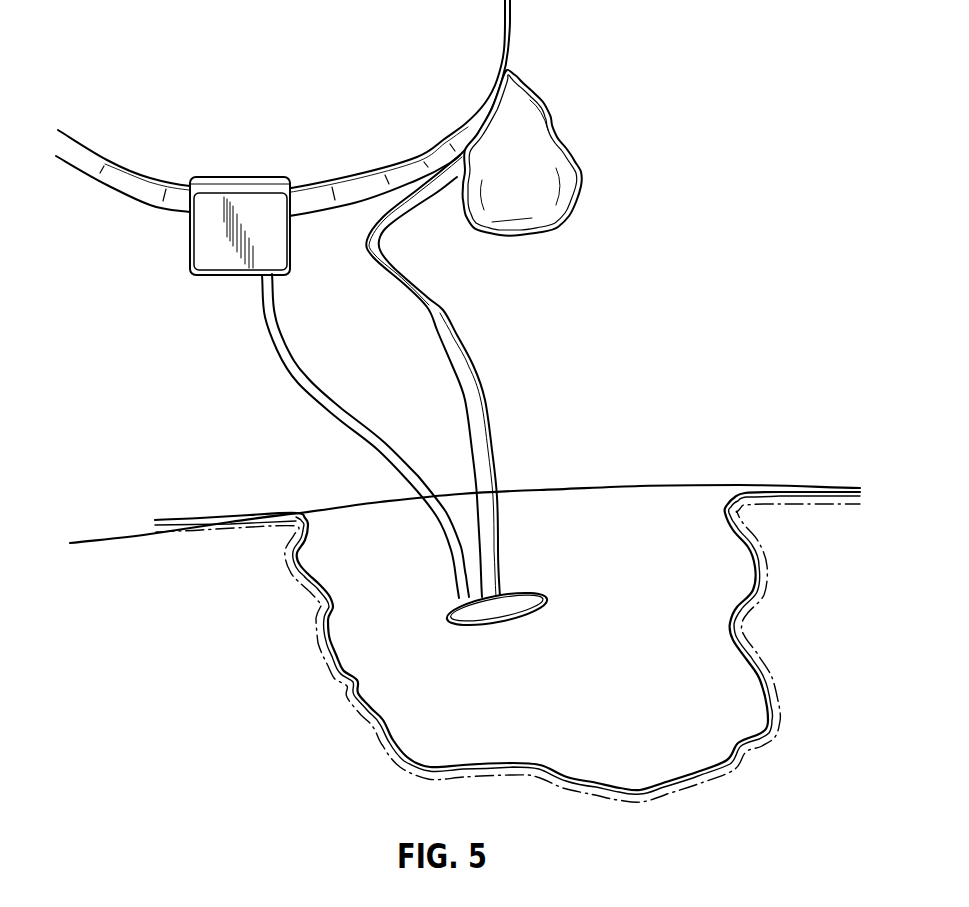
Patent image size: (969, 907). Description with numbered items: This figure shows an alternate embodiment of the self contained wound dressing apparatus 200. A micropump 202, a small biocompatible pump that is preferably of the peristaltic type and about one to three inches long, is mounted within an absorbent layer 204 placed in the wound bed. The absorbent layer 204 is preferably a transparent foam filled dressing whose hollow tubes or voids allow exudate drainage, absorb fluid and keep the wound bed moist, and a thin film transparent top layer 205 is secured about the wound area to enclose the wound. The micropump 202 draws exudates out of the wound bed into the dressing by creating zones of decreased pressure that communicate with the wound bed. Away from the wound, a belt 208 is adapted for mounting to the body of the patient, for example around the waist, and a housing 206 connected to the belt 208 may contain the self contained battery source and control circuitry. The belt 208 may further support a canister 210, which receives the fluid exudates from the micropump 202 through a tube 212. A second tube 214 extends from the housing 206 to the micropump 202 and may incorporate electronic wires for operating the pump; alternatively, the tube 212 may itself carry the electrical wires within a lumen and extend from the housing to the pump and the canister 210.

The wound dressing apparatus 200 is at (158, 381).
The micropump 202 is at (457, 630).
The absorbent layer 204 is at (697, 592).
The thin film transparent top layer 205 is at (213, 512).
The housing 206 is at (188, 238).
The belt 208 is at (112, 165).
The canister 210 is at (579, 182).
The tube 212 is at (474, 363).
The tube 214 is at (287, 364).